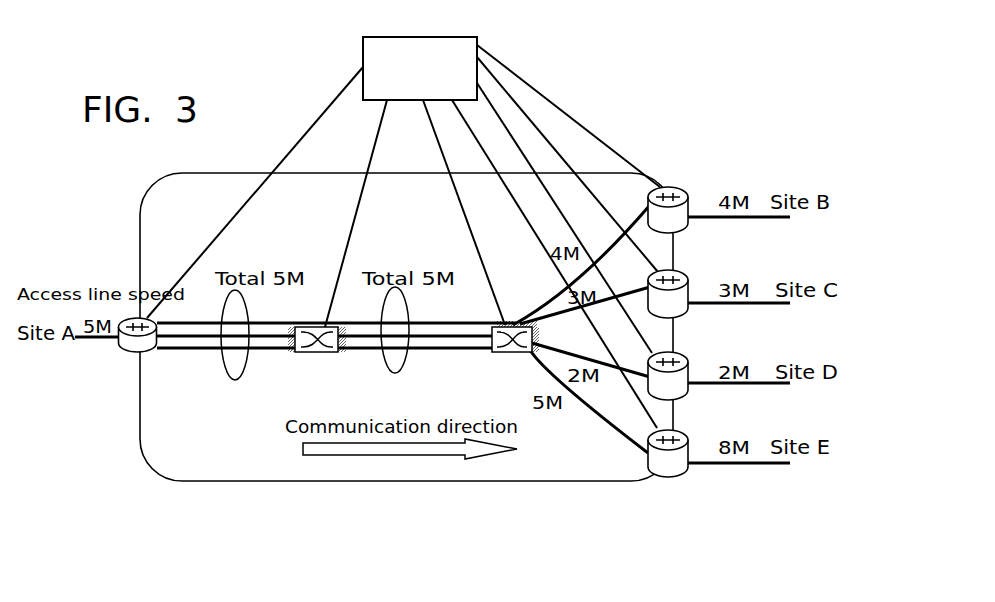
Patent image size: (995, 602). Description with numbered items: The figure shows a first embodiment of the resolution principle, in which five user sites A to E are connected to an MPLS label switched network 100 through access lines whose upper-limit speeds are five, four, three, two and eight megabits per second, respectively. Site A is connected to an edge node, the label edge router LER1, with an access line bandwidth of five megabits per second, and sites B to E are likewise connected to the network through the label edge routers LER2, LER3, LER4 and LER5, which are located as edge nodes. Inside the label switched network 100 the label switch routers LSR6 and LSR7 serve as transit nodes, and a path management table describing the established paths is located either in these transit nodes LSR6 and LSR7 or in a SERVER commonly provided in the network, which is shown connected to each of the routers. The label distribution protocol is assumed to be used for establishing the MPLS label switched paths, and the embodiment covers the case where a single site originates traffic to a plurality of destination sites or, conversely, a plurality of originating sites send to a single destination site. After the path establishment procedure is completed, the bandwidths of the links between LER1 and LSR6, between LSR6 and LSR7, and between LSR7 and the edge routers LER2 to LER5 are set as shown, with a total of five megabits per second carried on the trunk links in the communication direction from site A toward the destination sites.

The label switched network 100 is at (532, 481).
The server SERVER is at (403, 232).
The edge node LER (label edge router) 1 LER1 is at (136, 350).
The label edge router 2 LER2 is at (635, 209).
The label edge router 3 LER3 is at (644, 283).
The label edge router 4 LER4 is at (643, 366).
The label edge router 5 LER5 is at (644, 440).
The label switch router 6 LSR6 is at (320, 326).
The label switch router 7 LSR7 is at (495, 326).